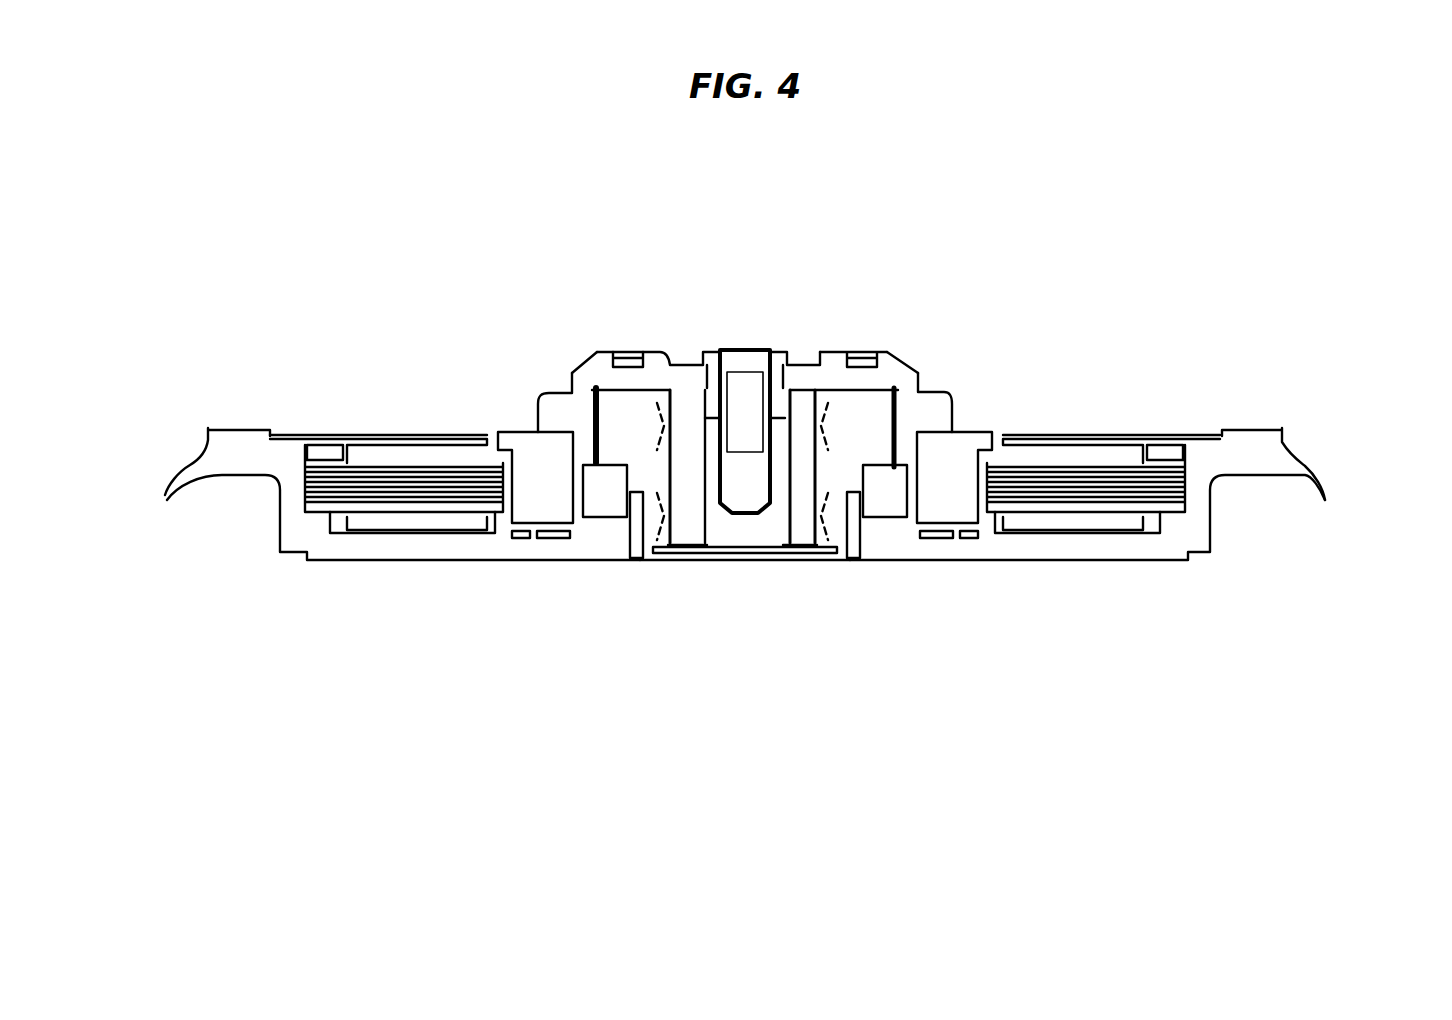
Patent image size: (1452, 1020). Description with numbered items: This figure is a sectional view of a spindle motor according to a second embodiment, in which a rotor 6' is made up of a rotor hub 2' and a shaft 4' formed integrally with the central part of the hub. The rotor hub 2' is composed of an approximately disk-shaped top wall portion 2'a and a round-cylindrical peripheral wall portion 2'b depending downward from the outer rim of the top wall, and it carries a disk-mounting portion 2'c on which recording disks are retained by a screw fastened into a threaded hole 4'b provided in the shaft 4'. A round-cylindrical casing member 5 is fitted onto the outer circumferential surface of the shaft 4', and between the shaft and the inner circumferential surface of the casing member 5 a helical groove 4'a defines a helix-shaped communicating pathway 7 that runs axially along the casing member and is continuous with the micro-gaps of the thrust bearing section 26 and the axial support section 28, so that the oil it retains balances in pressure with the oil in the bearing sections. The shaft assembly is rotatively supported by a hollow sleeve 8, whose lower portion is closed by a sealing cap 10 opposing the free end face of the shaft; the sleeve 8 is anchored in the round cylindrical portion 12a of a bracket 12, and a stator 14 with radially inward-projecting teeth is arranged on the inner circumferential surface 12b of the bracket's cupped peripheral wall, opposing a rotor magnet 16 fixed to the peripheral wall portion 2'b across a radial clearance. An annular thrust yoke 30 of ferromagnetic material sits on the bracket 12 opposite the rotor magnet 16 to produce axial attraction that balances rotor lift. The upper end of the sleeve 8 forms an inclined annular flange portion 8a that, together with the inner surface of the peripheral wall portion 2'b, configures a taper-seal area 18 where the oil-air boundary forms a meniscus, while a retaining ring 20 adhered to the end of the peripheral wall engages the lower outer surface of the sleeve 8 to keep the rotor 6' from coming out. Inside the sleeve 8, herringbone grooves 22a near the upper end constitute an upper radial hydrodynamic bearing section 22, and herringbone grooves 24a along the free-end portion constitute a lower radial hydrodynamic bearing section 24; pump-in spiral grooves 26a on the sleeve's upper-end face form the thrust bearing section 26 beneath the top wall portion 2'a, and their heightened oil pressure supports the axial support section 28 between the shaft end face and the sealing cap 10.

The rotor hub 2' is at (774, 311).
The top wall portion 2'a is at (866, 288).
The peripheral wall portion 2'b is at (361, 397).
The disk-mounting portion 2'c is at (991, 389).
The shaft 4' is at (740, 507).
The helical groove 4'a is at (782, 310).
The threaded hole 4'b is at (731, 342).
The casing member 5 is at (335, 515).
The rotor 6' is at (804, 307).
The communicating pathway 7 is at (705, 466).
The sleeve 8 is at (847, 430).
The flange portion 8a is at (583, 412).
The sealing cap 10 is at (800, 540).
The bracket 12 is at (1187, 533).
The round cylindrical portion 12a is at (855, 520).
The inner circumferential surface 12b is at (1190, 433).
The stator 14 is at (1077, 452).
The rotor magnet 16 is at (522, 502).
The taper-seal area 18 is at (933, 503).
The retaining ring 20 is at (883, 498).
The upper radial hydrodynamic bearing section 22 is at (678, 397).
The herringbone grooves 22a is at (660, 433).
The lower radial hydrodynamic bearing section 24 is at (658, 500).
The herringbone grooves 24a is at (662, 505).
The thrust bearing section 26 is at (631, 390).
The pump-in spiral grooves 26a is at (614, 383).
The axial support section 28 is at (762, 547).
The thrust yoke 30 is at (505, 530).